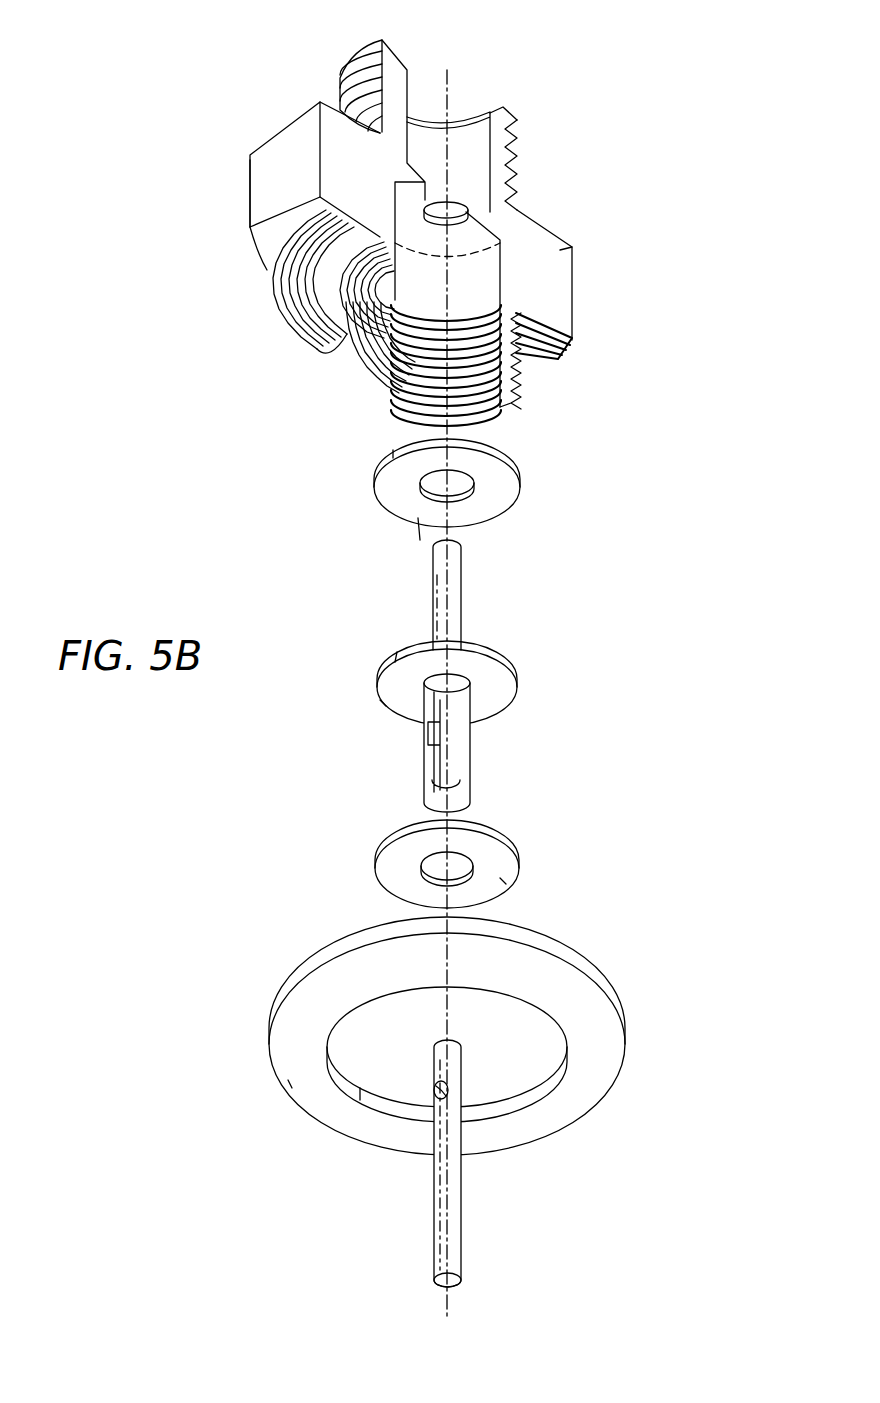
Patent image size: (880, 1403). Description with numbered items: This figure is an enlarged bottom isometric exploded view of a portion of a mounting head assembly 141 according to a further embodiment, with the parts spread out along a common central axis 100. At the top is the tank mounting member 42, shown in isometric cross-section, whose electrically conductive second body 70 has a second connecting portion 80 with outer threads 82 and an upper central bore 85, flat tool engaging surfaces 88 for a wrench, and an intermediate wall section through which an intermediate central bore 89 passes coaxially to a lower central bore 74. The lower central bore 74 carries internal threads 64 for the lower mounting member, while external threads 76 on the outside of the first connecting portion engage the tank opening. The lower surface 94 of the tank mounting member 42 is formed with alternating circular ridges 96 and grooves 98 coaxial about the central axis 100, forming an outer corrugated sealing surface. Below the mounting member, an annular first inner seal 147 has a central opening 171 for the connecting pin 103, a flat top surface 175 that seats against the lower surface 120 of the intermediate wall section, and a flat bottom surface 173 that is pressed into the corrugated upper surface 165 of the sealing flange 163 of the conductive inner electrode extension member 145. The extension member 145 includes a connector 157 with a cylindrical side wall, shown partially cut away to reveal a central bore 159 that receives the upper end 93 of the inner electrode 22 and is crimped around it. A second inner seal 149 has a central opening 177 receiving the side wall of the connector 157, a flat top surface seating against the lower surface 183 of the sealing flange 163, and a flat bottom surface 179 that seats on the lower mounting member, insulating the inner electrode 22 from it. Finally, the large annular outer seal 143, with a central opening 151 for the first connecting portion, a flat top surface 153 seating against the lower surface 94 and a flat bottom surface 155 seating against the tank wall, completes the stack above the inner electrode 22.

The inner electrode 22 is at (487, 1153).
The tank mounting member 42 is at (383, 237).
The internal threads 64 is at (488, 405).
The second body 70 is at (493, 250).
The lower central bore 74 is at (386, 405).
The external threads 76 is at (340, 360).
The second connecting portion 80 is at (478, 204).
The outer threads 82 is at (348, 84).
The upper central bore 85 is at (455, 148).
The flat tool engaging surfaces 88 is at (270, 155).
The intermediate central bore 89 is at (452, 206).
The upper end of the second electrode 93 is at (452, 1065).
The lower surface 94 is at (267, 243).
The ridges 96 is at (300, 316).
The grooves 98 is at (312, 330).
The central axis 100 is at (508, 590).
The connecting pin 103 is at (460, 578).
The lower surface of the intermediate wall section 120 is at (470, 240).
The mounting head assembly 141 is at (678, 302).
The outer seal 143 is at (463, 1050).
The inner electrode extension member 145 is at (453, 707).
The first inner seal 147 is at (467, 500).
The second inner seal 149 is at (447, 876).
The central opening 151 is at (393, 1103).
The flat top surface 153 is at (290, 1000).
The flat bottom surface 155 is at (290, 1085).
The connector 157 is at (443, 743).
The central bore 159 is at (451, 766).
The sealing flange 163 is at (500, 650).
The upper surface 165 is at (402, 652).
The central opening 171 is at (458, 486).
The flat bottom surface 173 is at (418, 520).
The flat top surface 175 is at (380, 468).
The central opening 177 is at (422, 884).
The flat bottom surface 179 is at (498, 882).
The lower surface of the sealing flange 183 is at (396, 706).